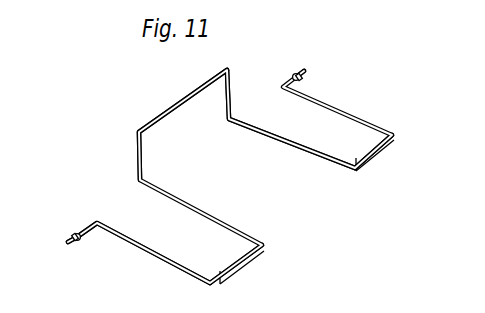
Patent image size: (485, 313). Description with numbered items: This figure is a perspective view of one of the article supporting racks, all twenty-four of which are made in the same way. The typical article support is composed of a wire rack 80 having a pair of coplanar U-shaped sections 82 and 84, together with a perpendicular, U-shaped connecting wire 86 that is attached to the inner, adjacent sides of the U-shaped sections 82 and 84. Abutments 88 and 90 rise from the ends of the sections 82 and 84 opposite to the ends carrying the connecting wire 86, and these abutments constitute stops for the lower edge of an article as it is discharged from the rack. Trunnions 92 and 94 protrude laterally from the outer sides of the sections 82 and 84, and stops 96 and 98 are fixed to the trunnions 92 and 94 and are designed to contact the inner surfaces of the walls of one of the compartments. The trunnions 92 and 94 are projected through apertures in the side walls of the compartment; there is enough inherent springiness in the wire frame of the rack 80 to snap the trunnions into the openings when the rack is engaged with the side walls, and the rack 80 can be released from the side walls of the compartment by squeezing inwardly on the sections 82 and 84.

The wire rack 80 is at (358, 122).
The U-shaped section 82 is at (277, 140).
The U-shaped section 84 is at (152, 253).
The U-shaped connecting wire 86 is at (171, 109).
The abutment 88 is at (246, 258).
The abutment 90 is at (374, 152).
The trunnion 92 is at (66, 241).
The trunnion 94 is at (304, 73).
The stop 96 is at (294, 73).
The stop 98 is at (79, 232).